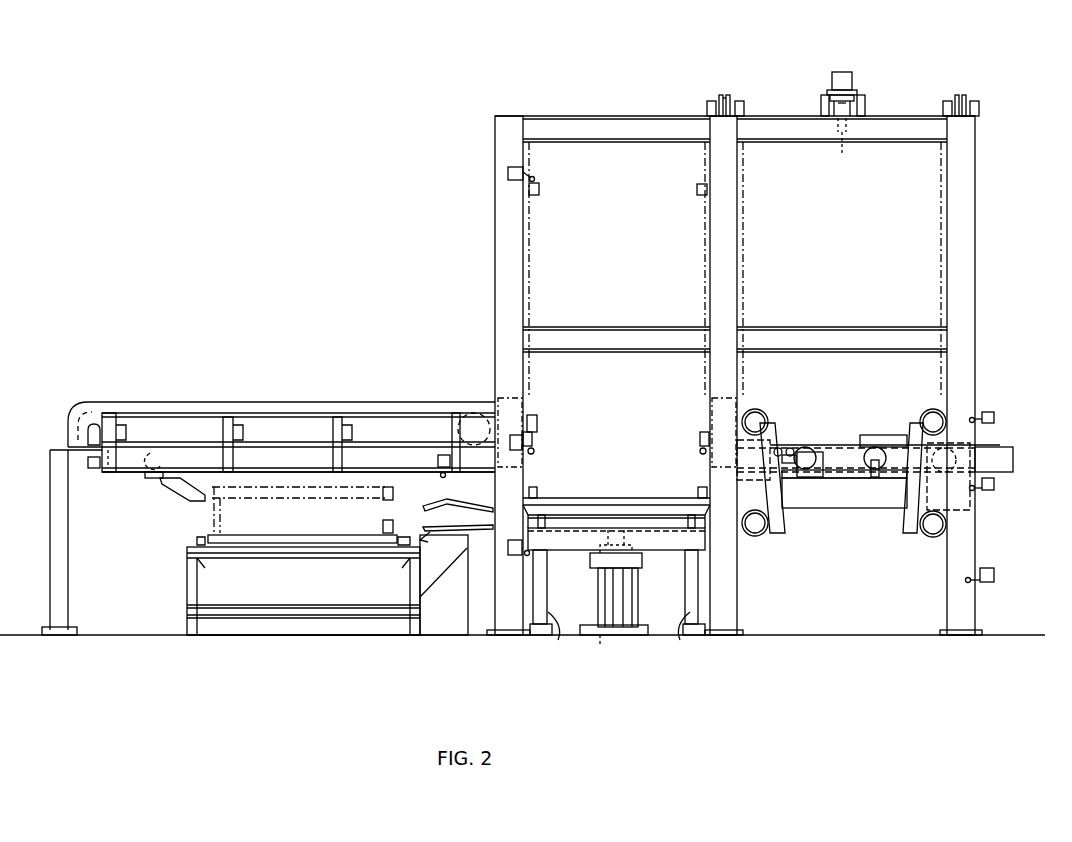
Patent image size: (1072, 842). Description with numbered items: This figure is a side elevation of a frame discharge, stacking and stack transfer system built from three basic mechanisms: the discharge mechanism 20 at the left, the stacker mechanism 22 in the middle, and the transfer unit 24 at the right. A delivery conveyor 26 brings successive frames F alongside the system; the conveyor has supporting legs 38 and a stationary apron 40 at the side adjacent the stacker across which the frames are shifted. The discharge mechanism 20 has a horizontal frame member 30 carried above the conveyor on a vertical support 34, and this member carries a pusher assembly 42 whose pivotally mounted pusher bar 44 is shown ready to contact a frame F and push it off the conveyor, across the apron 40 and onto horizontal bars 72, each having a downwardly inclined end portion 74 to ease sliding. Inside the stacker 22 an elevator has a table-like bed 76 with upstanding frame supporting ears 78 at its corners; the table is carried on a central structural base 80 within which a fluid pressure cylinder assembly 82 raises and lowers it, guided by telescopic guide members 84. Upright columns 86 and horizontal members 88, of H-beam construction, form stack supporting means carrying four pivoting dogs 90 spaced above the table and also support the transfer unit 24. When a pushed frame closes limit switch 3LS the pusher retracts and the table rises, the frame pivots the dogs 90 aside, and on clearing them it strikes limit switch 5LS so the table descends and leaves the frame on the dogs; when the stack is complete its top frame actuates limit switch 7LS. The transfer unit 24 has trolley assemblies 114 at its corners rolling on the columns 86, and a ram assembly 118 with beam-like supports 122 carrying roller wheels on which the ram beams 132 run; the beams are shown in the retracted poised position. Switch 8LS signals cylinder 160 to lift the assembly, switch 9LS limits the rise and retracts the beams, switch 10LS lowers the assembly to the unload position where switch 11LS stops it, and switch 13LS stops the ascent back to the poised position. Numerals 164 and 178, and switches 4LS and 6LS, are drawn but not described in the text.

The discharge mechanism 20 is at (308, 400).
The stacker mechanism 22 is at (596, 643).
The transfer unit 24 is at (848, 512).
The delivery conveyor 26 is at (325, 620).
The horizontal frame member 30 is at (388, 460).
The vertical support 34 is at (56, 548).
The supporting legs 38 is at (187, 585).
The stationary apron 40 is at (444, 585).
The pusher assembly 42 is at (142, 478).
The pusher bar 44 is at (196, 486).
The horizontal bars 72 is at (468, 524).
The downwardly inclined end portion 74 is at (423, 512).
The table-like bed 76 is at (578, 545).
The frame supporting ears 78 is at (548, 518).
The central structural base 80 is at (638, 603).
The fluid pressure cylinder assembly 82 is at (615, 610).
The telescopic guide members 84 is at (609, 638).
The upright columns 86 is at (508, 250).
The horizontal members 88 is at (606, 125).
The stack supports or dogs 90 is at (536, 444).
The trolley assemblies 114 is at (776, 532).
The ram assembly 118 is at (872, 450).
The beam-like supports 122 is at (844, 493).
The ram beams 132 is at (1005, 462).
The cylinder 160 is at (852, 82).
The drive shaft 164 is at (853, 150).
The clamps 178 is at (727, 101).
The limit switch 3LS is at (446, 455).
The limit switch 4LS is at (88, 462).
The limit switch 5LS is at (520, 438).
The limit switch 6LS is at (508, 548).
The limit switch 7LS is at (508, 172).
The limit switch 8LS is at (788, 462).
The limit switch 9LS is at (994, 418).
The limit switch 10LS is at (780, 450).
The limit switch 11LS is at (988, 582).
The limit switch 13LS is at (988, 490).
The frame F is at (540, 192).